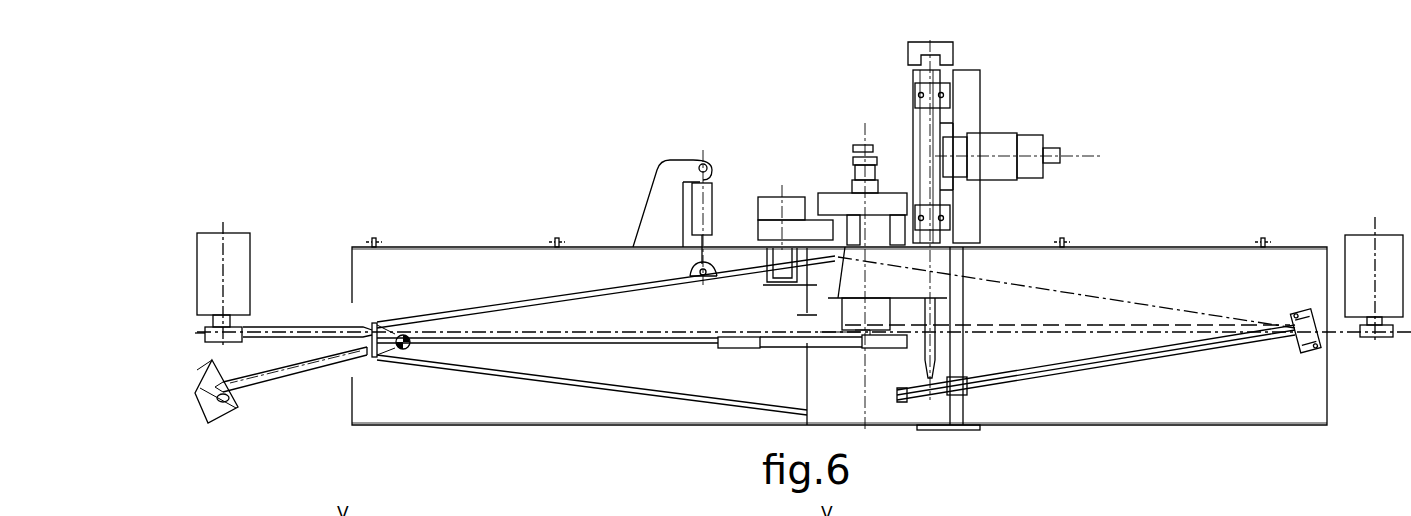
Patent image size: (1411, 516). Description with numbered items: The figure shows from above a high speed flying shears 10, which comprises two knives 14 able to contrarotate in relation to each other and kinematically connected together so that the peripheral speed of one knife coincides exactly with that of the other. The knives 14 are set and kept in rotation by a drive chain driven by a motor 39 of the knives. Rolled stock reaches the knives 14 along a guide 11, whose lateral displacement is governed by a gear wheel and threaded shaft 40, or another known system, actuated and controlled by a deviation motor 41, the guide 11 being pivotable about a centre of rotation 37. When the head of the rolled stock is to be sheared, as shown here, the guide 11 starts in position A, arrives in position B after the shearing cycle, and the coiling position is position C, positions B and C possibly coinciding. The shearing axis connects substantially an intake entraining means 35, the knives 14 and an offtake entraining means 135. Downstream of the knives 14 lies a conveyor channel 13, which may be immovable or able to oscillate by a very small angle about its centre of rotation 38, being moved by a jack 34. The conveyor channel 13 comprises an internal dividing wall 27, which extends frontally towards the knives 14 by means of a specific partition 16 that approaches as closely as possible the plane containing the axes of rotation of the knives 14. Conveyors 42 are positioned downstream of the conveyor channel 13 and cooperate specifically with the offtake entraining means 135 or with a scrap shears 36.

The flying shears 10 is at (1149, 135).
The guide 11 is at (1093, 363).
The conveyor channel 13 is at (597, 362).
The knives 14 is at (887, 343).
The partition 16 is at (738, 343).
The internal dividing wall 27 is at (510, 345).
The jack 34 is at (705, 197).
The intake entraining means 35 is at (1380, 250).
The scrap shears 36 is at (207, 408).
The centre of rotation 37 is at (1312, 348).
The centre of rotation 38 is at (402, 334).
The motor of the knives 39 is at (830, 205).
The gear wheel and threaded shaft 40 is at (928, 117).
The deviation motor 41 is at (998, 148).
The conveyors 42 is at (280, 328).
The offtake entraining means 135 is at (240, 250).